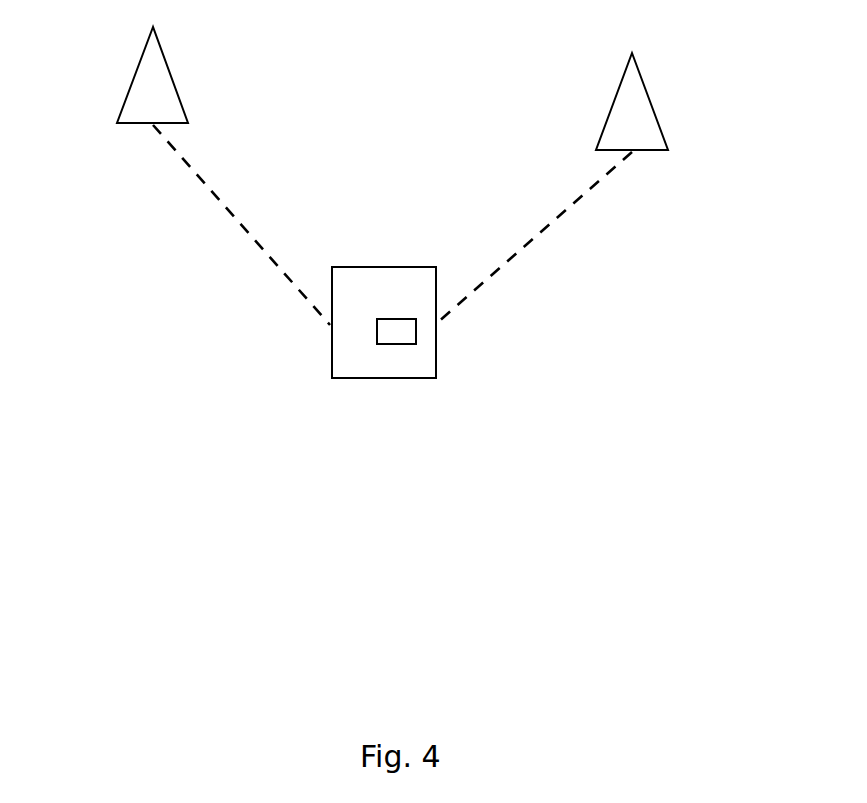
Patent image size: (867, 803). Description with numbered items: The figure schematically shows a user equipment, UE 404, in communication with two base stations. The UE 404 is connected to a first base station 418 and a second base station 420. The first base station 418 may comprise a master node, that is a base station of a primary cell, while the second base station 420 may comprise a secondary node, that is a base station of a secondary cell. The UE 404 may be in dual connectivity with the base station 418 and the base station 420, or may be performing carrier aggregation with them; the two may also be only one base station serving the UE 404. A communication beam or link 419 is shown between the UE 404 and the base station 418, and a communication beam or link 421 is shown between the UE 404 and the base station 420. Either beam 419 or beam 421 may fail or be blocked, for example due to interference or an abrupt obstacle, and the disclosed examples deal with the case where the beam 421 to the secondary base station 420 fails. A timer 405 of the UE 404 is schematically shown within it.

The first base station 418 is at (155, 100).
The second base station 420 is at (633, 123).
The communication beam or link 419 is at (248, 221).
The communication beam or link 421 is at (545, 225).
The UE 404 is at (387, 370).
The timer 405 is at (402, 335).